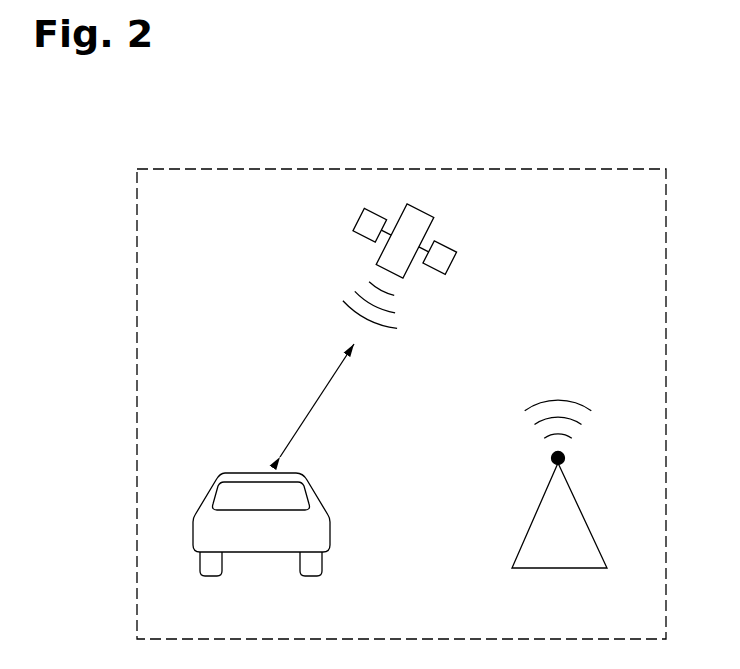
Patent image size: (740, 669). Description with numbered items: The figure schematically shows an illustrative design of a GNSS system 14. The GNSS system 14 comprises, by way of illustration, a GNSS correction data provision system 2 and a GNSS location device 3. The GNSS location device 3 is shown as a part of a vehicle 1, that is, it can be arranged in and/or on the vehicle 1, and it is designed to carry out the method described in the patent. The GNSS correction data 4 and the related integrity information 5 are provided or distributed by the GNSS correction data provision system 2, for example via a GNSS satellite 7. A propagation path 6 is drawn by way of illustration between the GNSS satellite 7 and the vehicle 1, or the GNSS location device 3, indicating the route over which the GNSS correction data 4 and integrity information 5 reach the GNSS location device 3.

The vehicle 1 is at (302, 484).
The GNSS correction data provision system 2 is at (537, 510).
The GNSS location device 3 is at (238, 488).
The GNSS correction data 4 is at (382, 328).
The integrity information 5 is at (567, 402).
The propagation path 6 is at (312, 402).
The GNSS satellite 7 is at (418, 212).
The GNSS system 14 is at (585, 168).